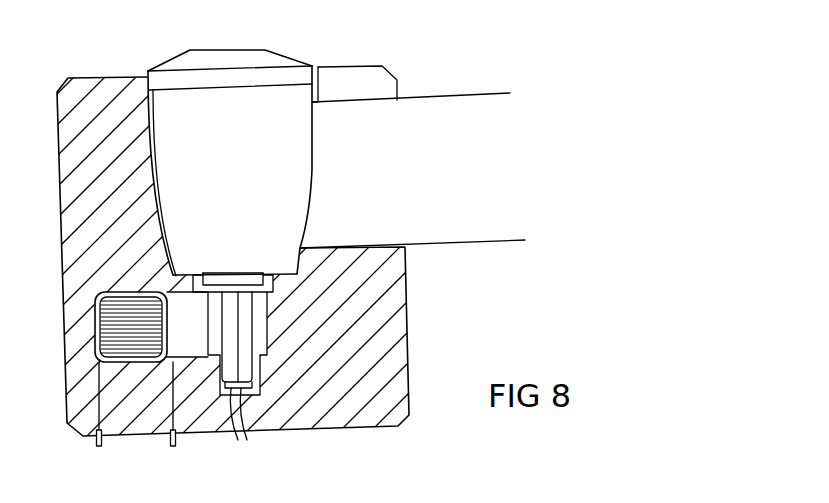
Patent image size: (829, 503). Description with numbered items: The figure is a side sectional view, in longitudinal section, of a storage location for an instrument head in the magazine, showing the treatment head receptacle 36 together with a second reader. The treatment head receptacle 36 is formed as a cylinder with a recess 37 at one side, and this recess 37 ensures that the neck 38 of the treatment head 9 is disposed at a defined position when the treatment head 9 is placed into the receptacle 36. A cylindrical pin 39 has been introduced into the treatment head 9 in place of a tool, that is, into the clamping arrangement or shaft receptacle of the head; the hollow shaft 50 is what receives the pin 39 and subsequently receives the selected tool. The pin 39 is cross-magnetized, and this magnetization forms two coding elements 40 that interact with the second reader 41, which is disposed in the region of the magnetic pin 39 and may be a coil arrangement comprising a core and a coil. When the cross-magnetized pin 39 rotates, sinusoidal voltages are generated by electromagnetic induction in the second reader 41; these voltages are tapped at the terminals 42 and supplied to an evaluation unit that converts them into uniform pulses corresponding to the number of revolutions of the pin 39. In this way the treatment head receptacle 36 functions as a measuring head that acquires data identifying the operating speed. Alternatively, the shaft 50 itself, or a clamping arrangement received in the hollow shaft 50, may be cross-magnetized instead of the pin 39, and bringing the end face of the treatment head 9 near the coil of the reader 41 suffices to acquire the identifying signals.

The treatment head 9 is at (217, 60).
The treatment head receptacle 36 is at (90, 92).
The recess 37 is at (383, 80).
The neck 38 is at (457, 218).
The cylindrical pin 39 is at (252, 339).
The coding elements 40 is at (245, 429).
The second reader 41 is at (92, 327).
The terminals 42 is at (175, 446).
The shaft 50 is at (226, 277).